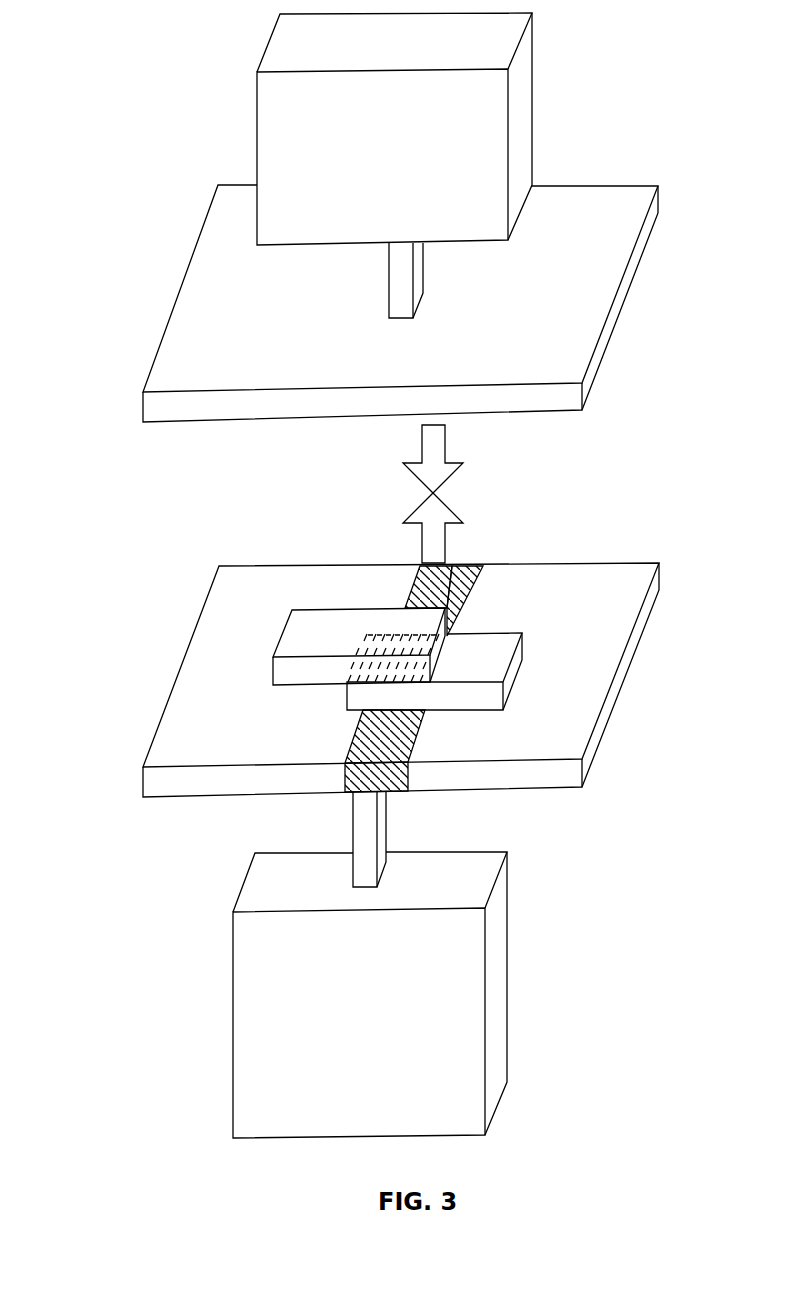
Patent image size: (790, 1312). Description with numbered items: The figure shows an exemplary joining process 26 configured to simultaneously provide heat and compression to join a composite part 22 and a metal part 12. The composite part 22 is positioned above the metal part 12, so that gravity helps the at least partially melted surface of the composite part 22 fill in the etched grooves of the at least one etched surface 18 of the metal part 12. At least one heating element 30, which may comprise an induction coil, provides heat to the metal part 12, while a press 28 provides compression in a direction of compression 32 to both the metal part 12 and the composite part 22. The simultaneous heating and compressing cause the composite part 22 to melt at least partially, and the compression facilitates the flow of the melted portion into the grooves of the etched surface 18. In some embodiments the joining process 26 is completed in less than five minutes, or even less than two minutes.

The joining process 26 is at (120, 35).
The press 28 is at (210, 300).
The direction of compression 32 is at (452, 490).
The heating element 30 is at (450, 565).
The composite part 22 is at (332, 622).
The etched surface 18 is at (403, 665).
The metal part 12 is at (515, 665).